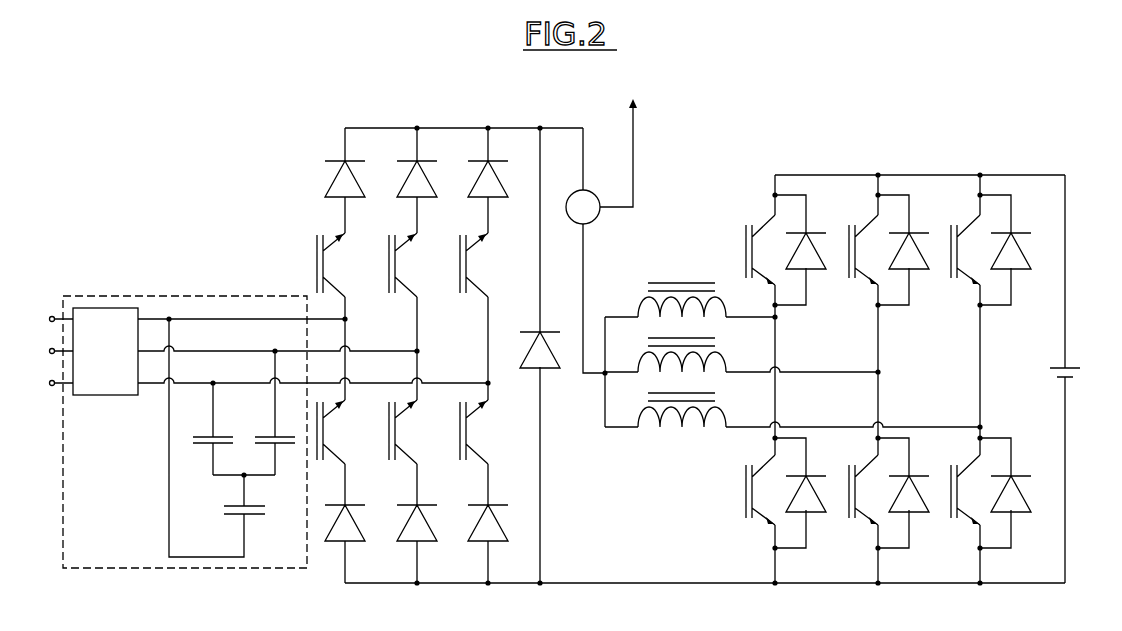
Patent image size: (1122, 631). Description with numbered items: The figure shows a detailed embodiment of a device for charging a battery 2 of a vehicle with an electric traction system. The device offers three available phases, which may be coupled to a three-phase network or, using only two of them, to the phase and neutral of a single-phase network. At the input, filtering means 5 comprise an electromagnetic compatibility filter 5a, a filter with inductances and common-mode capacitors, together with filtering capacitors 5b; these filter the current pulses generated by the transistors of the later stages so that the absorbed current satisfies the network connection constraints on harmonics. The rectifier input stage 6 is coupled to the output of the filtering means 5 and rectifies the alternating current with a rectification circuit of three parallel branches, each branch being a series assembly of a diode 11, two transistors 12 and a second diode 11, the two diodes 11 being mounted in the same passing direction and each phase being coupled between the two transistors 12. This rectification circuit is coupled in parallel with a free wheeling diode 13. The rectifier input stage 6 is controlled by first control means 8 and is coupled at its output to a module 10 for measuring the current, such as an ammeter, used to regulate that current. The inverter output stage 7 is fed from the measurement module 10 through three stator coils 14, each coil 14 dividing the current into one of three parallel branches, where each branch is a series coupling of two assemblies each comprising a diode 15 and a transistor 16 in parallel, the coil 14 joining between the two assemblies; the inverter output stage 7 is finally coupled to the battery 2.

The battery 2 is at (1075, 382).
The filtering means 5 is at (183, 296).
The electromagnetic compatibility (EMC) filter 5a is at (107, 397).
The filtering capacitors 5b is at (205, 450).
The rectifier input stage 6 is at (467, 104).
The inverter output stage 7 is at (928, 146).
The first control means 8 is at (619, 143).
The module for measuring the current 10 is at (599, 216).
The diode 11 is at (354, 198).
The transistor 12 is at (323, 264).
The free wheeling diode 13 is at (548, 369).
The stator coil 14 is at (638, 301).
The diode 15 is at (812, 270).
The transistor 16 is at (746, 227).